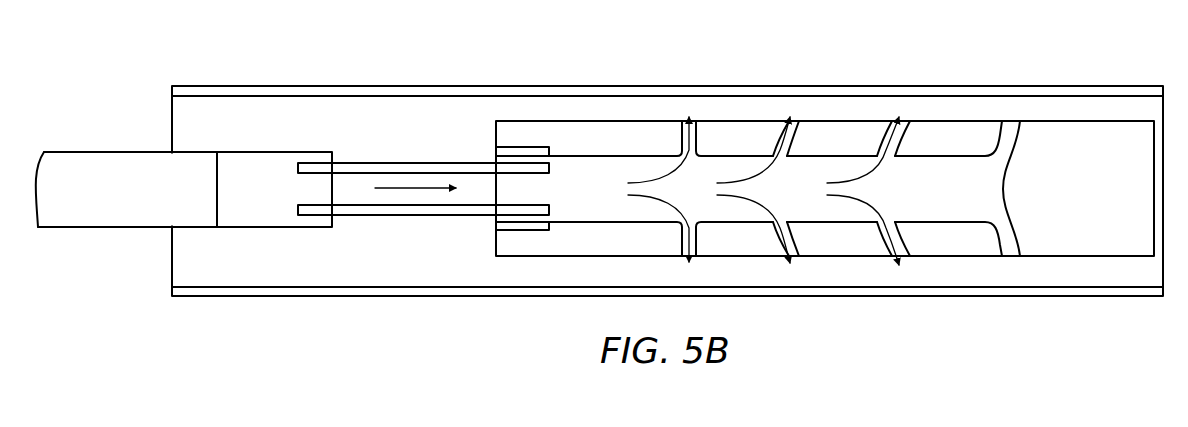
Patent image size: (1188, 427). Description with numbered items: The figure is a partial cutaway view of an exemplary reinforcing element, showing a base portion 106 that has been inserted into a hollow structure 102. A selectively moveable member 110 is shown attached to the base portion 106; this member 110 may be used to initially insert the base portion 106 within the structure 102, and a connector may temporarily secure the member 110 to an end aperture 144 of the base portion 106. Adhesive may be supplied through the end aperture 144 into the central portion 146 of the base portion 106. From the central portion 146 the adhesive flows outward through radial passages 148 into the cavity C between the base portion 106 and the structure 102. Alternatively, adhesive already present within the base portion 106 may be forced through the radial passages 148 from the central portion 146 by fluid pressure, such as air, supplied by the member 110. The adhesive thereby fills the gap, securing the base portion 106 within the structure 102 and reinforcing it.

The structure 102 is at (1092, 86).
The member 110 is at (97, 167).
The cavity C is at (431, 122).
The end aperture 144 is at (495, 213).
The base portion 106 is at (580, 244).
The central portion 146 is at (750, 177).
The radial passages 148 is at (900, 258).